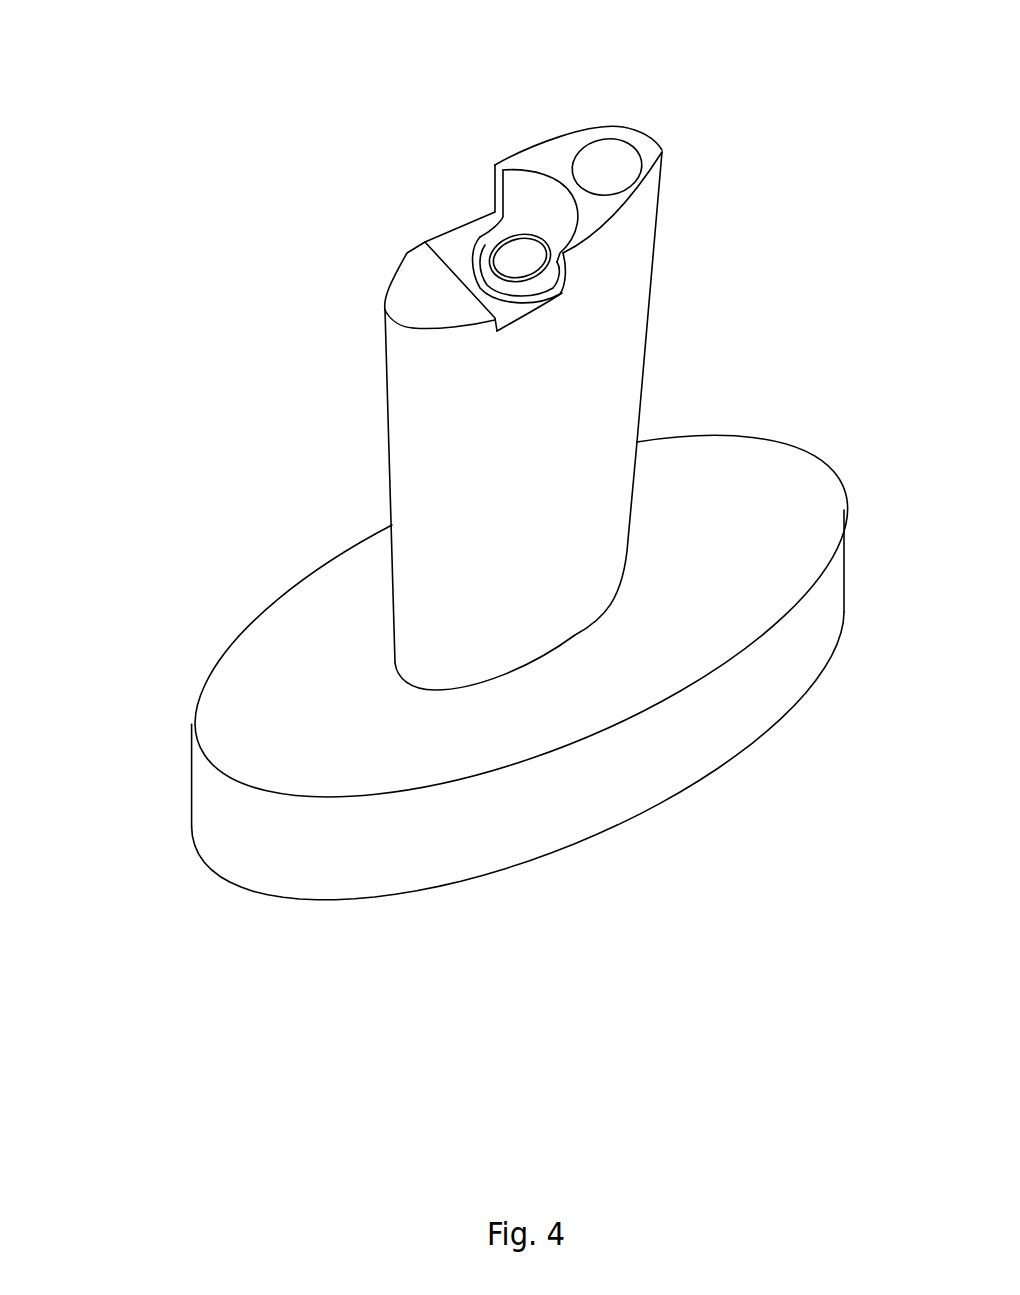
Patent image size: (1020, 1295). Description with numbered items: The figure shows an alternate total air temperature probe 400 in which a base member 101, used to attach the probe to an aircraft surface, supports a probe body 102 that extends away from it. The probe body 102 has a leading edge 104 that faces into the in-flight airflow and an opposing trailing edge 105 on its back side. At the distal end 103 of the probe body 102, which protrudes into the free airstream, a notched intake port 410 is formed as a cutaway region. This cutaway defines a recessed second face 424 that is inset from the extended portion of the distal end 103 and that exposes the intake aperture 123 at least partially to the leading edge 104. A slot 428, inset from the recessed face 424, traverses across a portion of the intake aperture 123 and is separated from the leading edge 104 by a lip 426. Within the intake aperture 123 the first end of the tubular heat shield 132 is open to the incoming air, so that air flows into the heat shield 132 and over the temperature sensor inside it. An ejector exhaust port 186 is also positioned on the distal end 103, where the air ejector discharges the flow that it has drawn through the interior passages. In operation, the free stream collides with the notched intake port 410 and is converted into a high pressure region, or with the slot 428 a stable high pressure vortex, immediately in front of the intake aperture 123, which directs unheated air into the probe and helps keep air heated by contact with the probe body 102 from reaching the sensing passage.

The alternate total air temperature probe 400 is at (130, 131).
The base member 101 is at (242, 628).
The probe body 102 is at (252, 380).
The distal end 103 is at (595, 76).
The leading edge 104 is at (389, 498).
The trailing edge 105 is at (653, 288).
The intake aperture 123 is at (536, 192).
The tubular heat shield 132 is at (533, 285).
The ejector exhaust port 186 is at (634, 148).
The notched intake port 410 is at (470, 175).
The recessed second face 424 is at (623, 118).
The lip 426 is at (387, 313).
The slot 428 is at (520, 326).